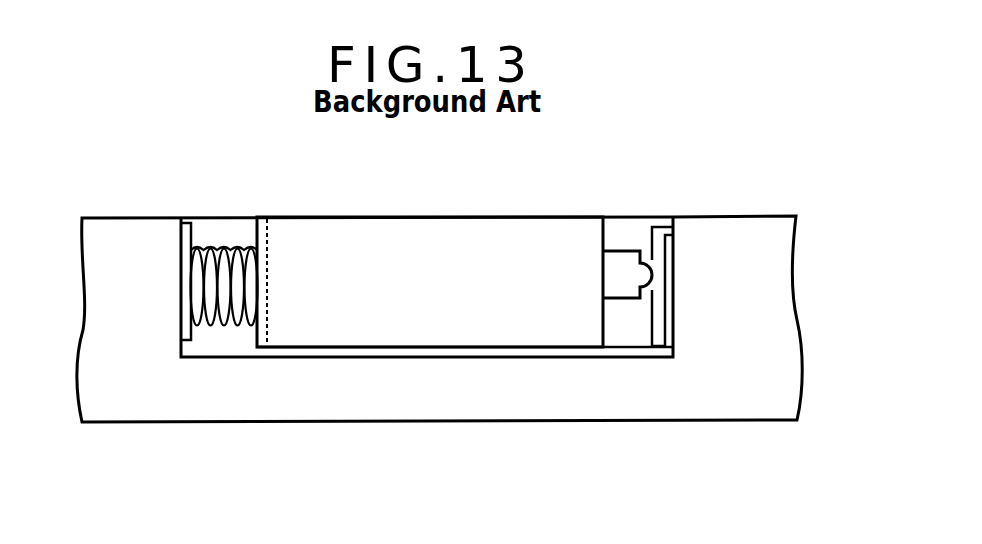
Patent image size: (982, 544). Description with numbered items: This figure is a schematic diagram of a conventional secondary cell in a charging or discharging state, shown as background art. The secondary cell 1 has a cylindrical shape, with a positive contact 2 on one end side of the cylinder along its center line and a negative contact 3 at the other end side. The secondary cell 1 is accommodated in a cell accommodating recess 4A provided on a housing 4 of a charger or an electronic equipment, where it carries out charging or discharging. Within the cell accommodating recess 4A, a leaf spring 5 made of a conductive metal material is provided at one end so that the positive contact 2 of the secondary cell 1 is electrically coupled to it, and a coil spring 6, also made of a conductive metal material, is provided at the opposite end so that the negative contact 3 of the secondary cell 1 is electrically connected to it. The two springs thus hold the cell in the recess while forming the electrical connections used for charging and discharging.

The secondary cell 1 is at (365, 228).
The positive contact 2 is at (618, 258).
The negative contact 3 is at (257, 238).
The housing 4 is at (628, 392).
The cell accommodating recess 4A is at (221, 345).
The leaf spring 5 is at (657, 237).
The coil spring 6 is at (217, 248).